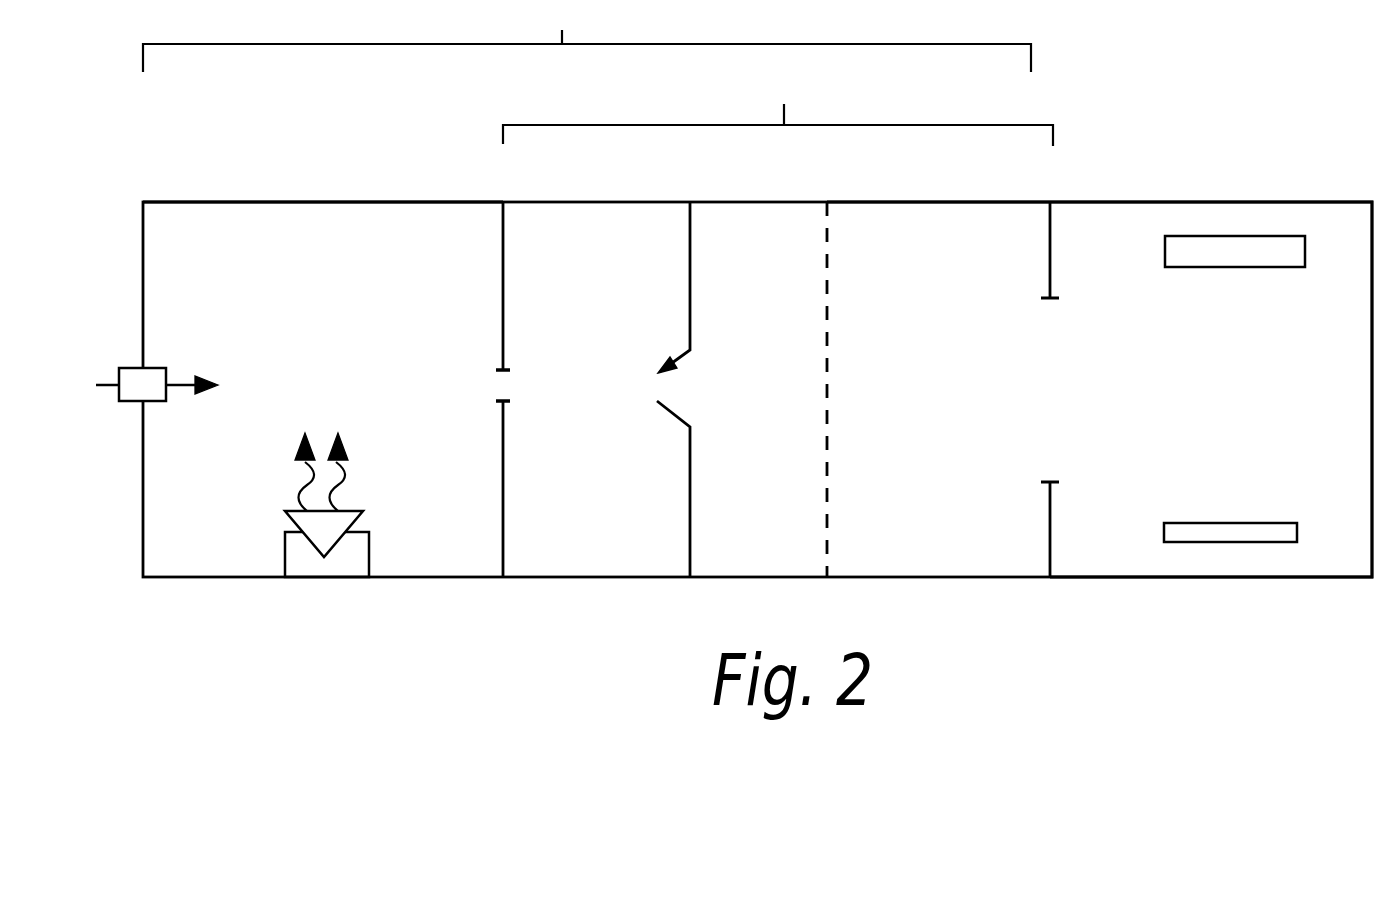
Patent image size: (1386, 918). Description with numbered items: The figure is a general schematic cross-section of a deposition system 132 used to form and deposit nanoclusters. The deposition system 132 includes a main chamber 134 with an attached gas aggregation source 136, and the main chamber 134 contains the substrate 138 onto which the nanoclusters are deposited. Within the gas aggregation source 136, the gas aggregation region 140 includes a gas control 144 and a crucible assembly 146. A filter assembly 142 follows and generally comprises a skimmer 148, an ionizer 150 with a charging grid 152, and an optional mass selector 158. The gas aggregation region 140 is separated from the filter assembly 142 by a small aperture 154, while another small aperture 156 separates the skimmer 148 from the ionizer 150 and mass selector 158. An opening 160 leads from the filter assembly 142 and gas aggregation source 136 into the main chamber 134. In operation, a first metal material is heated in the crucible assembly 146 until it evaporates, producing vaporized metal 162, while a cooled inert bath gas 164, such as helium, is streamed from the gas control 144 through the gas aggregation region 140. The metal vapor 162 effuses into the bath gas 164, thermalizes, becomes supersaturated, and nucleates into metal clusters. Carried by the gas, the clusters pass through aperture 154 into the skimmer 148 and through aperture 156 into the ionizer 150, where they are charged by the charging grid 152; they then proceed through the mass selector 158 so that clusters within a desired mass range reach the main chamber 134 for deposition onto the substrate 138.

The deposition system 132 is at (418, 710).
The main chamber 134 is at (1091, 205).
The gas aggregation source 136 is at (587, 36).
The substrate 138 is at (1268, 535).
The gas aggregation region 140 is at (252, 218).
The filter assembly 142 is at (778, 109).
The gas control 144 is at (152, 380).
The crucible assembly 146 is at (355, 562).
The skimmer 148 is at (561, 208).
The ionizer 150 is at (742, 216).
The charging grid 152 is at (829, 368).
The aperture 154 is at (502, 387).
The aperture 156 is at (670, 392).
The mass selector 158 is at (897, 216).
The opening 160 is at (1108, 396).
The vaporized metal 162 is at (1228, 256).
The bath gas 164 is at (196, 380).